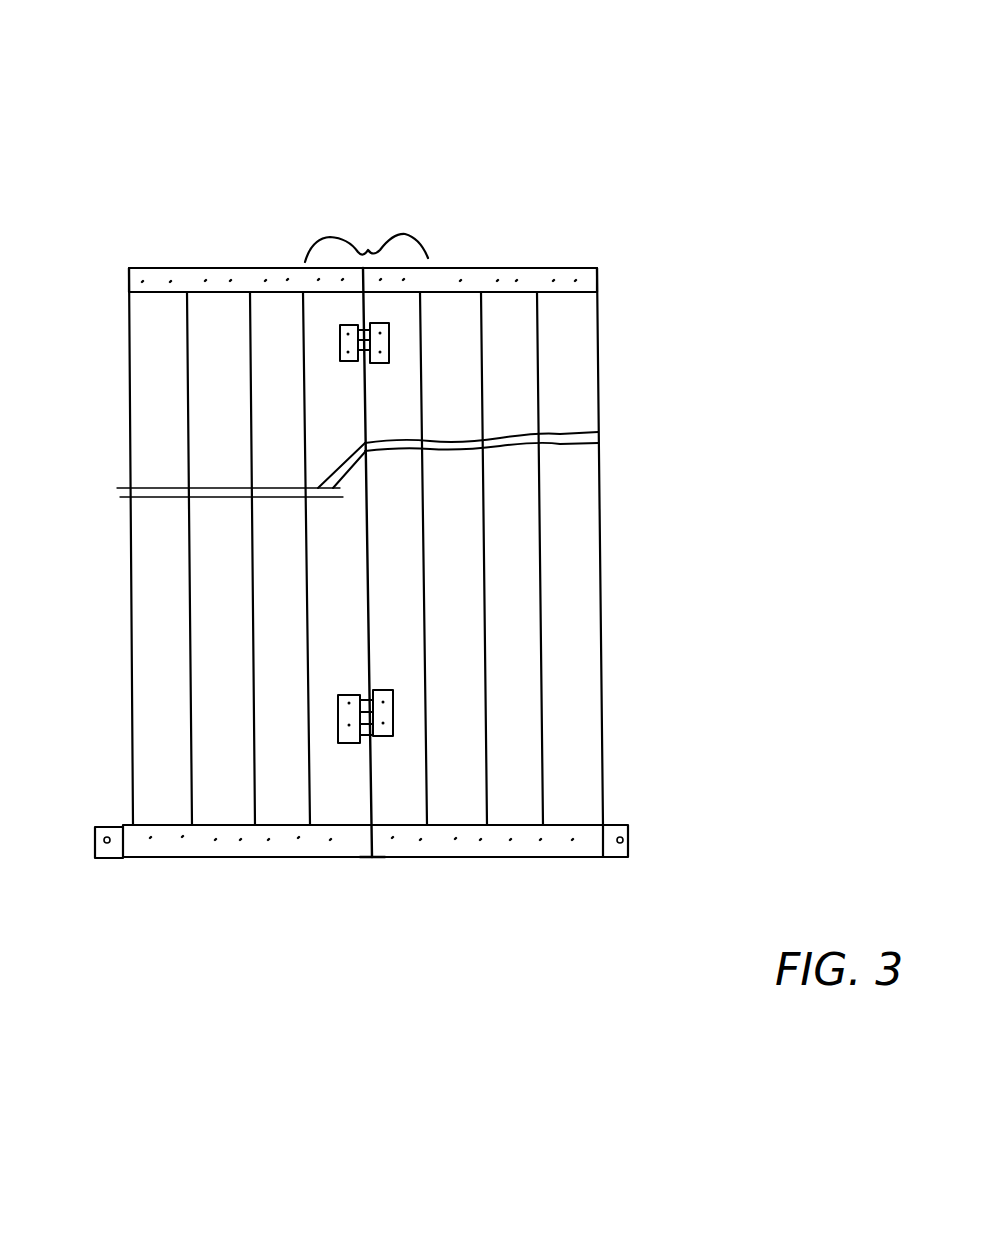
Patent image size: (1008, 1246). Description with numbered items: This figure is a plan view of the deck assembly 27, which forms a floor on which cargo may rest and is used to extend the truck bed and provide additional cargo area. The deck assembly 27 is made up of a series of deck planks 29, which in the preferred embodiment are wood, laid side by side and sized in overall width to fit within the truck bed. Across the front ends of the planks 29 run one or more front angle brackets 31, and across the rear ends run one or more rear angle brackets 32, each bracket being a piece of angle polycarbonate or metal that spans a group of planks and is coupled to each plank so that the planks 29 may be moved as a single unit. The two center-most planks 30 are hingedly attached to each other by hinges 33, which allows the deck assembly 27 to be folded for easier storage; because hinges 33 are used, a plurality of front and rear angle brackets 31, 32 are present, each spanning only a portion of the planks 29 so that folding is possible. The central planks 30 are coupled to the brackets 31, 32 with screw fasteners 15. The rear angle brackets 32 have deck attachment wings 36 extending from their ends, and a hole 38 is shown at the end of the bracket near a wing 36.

The fasteners 15 is at (180, 835).
The deck assembly 27 is at (507, 875).
The deck planks 29 is at (403, 561).
The center-most planks 30 is at (369, 220).
The front angle brackets 31 is at (200, 282).
The rear angle brackets 32 is at (462, 845).
The hinges 33 is at (390, 333).
The deck attachment wings 36 is at (612, 822).
The mounting hole 38 is at (625, 842).